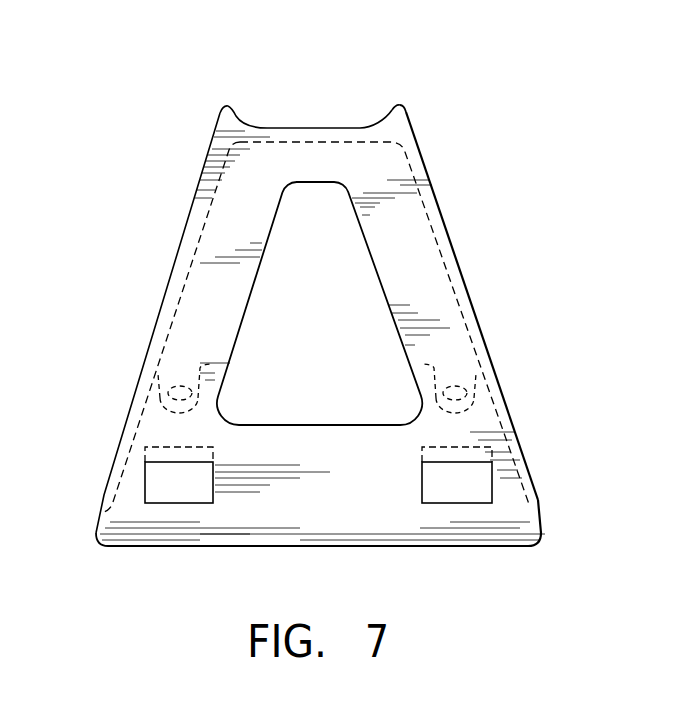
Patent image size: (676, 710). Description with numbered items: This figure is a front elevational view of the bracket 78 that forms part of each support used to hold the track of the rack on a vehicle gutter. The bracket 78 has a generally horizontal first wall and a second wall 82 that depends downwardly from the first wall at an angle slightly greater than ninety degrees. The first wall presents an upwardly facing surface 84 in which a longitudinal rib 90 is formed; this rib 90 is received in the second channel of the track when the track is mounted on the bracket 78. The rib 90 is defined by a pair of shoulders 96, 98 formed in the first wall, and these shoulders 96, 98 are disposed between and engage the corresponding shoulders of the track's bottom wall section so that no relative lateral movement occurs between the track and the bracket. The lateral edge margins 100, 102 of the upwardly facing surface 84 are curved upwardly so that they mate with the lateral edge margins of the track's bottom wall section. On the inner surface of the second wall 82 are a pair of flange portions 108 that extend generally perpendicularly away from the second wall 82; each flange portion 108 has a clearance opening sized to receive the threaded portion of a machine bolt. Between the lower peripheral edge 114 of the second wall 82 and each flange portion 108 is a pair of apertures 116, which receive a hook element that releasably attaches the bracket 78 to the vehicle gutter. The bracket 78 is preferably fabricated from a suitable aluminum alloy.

The bracket 78 is at (462, 244).
The second wall 82 is at (252, 532).
The upwardly facing surface 84 is at (378, 122).
The longitudinal rib 90 is at (290, 126).
The shoulder 96 is at (265, 128).
The shoulder 98 is at (362, 128).
The lateral edge margin 100 is at (232, 106).
The lateral edge margin 102 is at (401, 105).
The flange portion 108 is at (152, 422).
The lower peripheral edge 114 is at (488, 547).
The aperture 116 is at (145, 482).